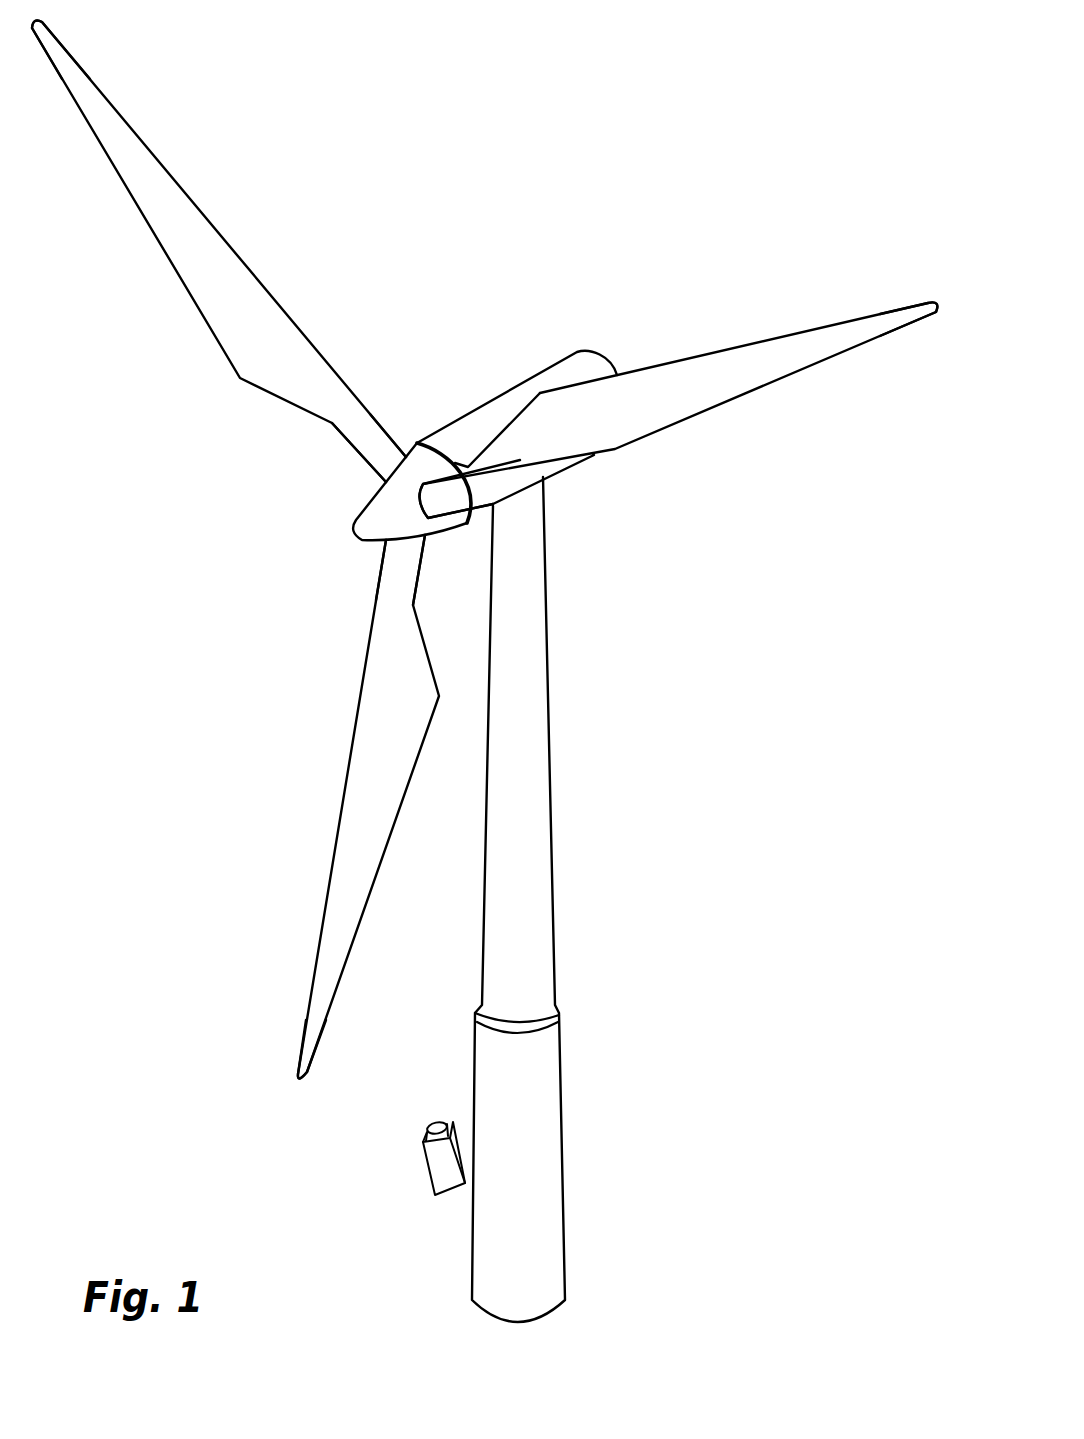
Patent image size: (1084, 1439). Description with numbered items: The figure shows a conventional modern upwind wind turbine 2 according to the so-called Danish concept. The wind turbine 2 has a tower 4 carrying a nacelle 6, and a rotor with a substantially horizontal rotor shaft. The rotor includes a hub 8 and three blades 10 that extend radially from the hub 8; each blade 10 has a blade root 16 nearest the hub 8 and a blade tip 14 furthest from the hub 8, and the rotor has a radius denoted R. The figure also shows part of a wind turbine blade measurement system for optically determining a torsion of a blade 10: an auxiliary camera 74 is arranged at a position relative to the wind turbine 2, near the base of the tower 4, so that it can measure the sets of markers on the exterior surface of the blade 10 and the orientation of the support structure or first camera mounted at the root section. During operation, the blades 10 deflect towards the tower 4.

The wind turbine 2 is at (654, 833).
The tower 4 is at (538, 748).
The nacelle 6 is at (480, 420).
The hub 8 is at (378, 512).
The blade 10 is at (253, 348).
The blade tip 14 is at (82, 82).
The blade root 16 is at (385, 462).
The auxiliary camera 74 is at (440, 1182).